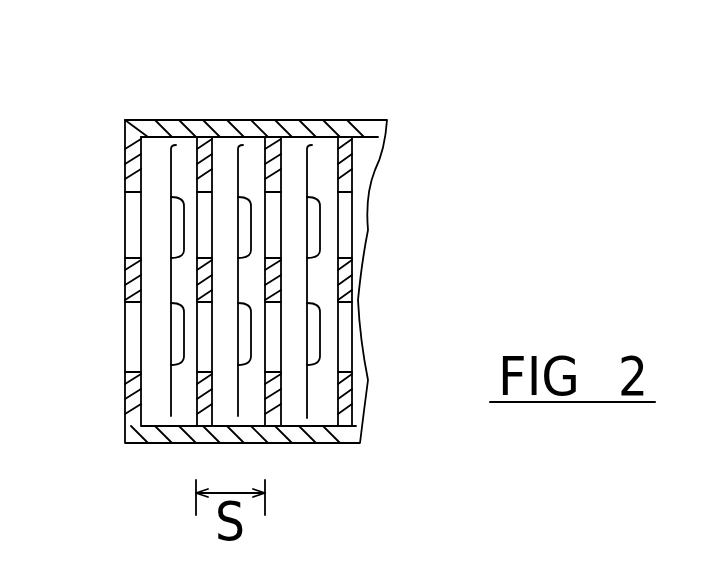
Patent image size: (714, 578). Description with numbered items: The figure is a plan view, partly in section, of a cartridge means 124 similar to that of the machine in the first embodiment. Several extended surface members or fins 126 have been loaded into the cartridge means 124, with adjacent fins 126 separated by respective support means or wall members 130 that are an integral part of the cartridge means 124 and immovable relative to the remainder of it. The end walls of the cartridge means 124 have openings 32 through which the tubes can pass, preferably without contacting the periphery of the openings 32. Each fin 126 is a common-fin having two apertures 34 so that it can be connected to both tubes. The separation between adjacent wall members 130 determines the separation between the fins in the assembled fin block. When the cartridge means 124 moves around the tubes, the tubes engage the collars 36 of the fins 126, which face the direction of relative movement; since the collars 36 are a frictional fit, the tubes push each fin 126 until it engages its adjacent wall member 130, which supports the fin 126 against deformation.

The cartridge means 124 is at (290, 231).
The fin 126 is at (106, 232).
The wall member 130 is at (256, 136).
The opening 32 is at (127, 313).
The aperture 34 is at (204, 230).
The collar 36 is at (177, 342).